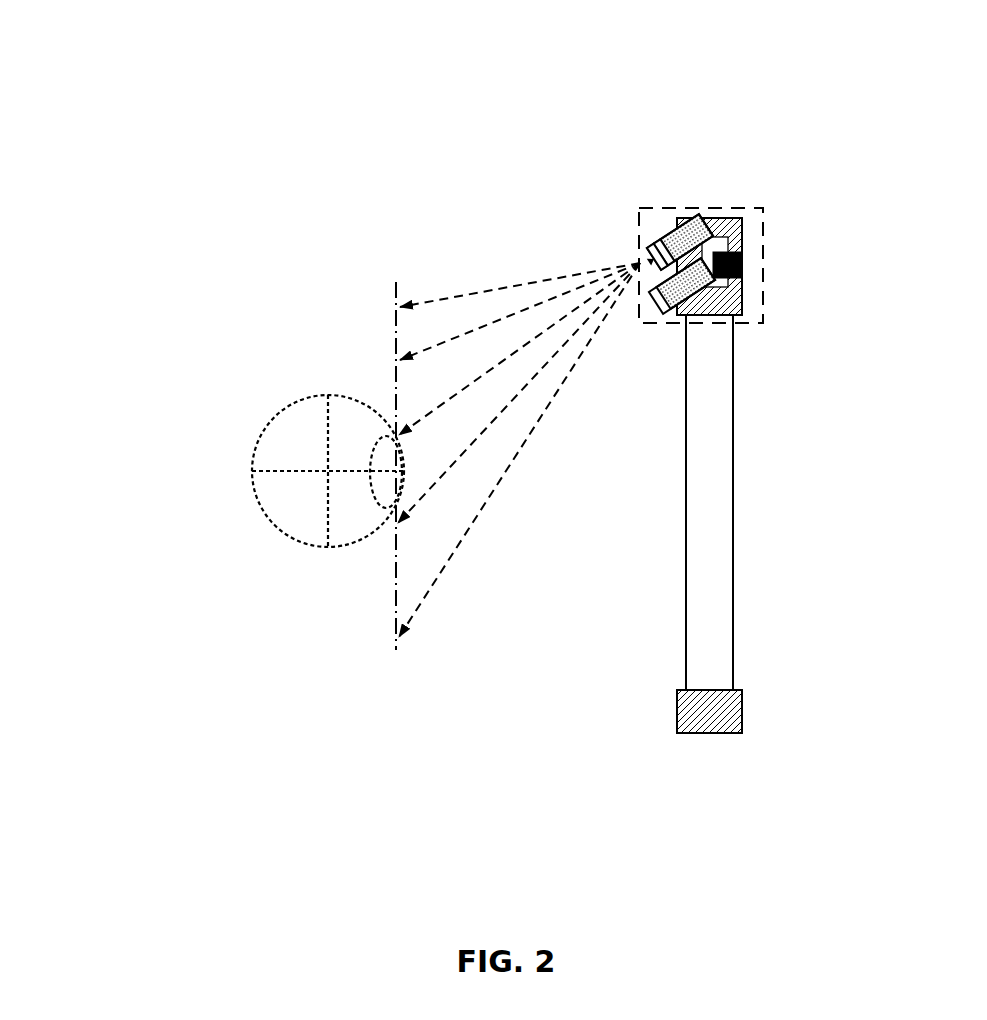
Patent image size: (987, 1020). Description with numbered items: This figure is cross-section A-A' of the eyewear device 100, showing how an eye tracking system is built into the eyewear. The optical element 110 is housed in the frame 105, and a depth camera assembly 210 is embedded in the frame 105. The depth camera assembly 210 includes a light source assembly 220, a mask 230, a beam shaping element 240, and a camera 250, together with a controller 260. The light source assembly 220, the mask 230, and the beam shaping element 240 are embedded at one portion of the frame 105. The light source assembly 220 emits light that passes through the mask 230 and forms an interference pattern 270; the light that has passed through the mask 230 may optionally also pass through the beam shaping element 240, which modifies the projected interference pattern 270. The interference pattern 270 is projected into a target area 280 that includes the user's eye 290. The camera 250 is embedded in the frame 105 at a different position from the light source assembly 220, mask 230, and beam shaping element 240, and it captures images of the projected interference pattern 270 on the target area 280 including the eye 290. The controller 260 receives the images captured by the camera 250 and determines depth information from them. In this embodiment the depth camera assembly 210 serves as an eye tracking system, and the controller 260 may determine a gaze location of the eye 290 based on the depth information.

The eyewear device 100 is at (119, 111).
The frame 105 is at (667, 797).
The optical element 110 is at (713, 473).
The depth camera assembly 210 is at (763, 245).
The light source assembly 220 is at (678, 220).
The mask 230 is at (658, 243).
The beam shaping element 240 is at (649, 240).
The camera 250 is at (686, 318).
The controller 260 is at (741, 265).
The interference pattern 270 is at (513, 498).
The target area 280 is at (380, 580).
The eye 290 is at (285, 413).